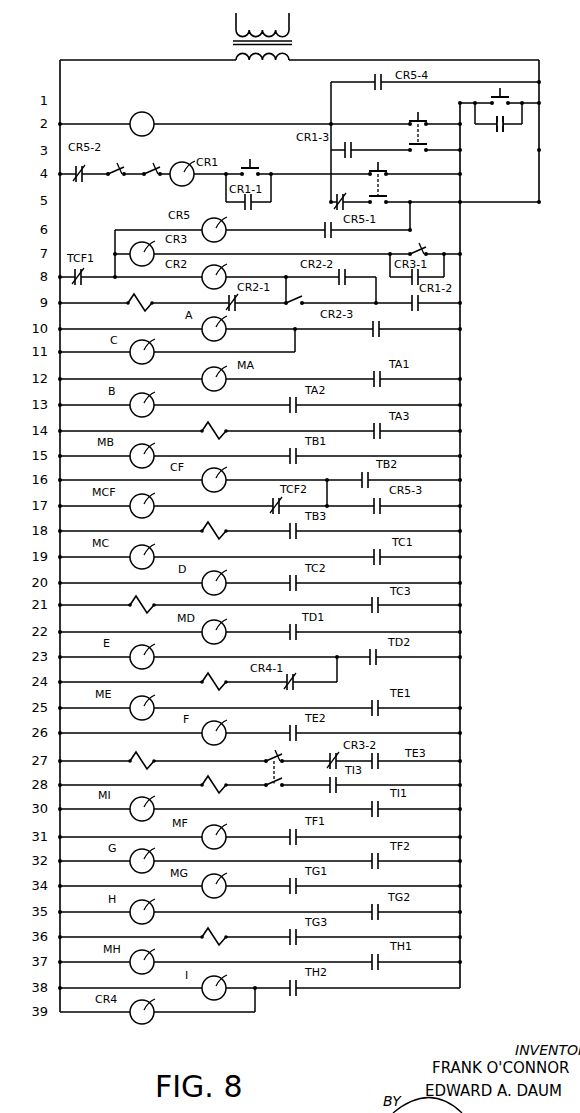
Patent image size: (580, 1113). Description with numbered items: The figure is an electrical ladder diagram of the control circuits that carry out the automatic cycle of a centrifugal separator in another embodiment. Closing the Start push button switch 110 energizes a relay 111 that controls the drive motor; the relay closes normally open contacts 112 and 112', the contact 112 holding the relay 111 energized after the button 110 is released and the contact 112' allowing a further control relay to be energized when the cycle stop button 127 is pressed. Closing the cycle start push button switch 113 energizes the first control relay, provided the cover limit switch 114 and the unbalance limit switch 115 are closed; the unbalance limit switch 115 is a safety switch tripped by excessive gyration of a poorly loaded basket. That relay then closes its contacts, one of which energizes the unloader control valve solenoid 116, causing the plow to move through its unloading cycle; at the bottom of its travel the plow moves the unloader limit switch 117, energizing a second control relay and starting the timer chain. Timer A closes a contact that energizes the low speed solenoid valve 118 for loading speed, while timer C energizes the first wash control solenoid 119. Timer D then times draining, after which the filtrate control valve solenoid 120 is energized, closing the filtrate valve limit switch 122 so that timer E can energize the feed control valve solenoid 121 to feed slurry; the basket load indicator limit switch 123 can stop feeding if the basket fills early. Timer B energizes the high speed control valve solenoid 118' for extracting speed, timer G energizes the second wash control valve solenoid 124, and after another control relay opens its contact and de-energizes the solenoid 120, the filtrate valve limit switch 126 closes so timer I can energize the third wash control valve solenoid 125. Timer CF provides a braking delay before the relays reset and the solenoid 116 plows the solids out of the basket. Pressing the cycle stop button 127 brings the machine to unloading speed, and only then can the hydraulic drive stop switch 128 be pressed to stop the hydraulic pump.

The Start push button switch 110 is at (494, 96).
The relay 111 is at (144, 122).
The normally open contact 112 is at (490, 132).
The normally open contact 112' is at (345, 195).
The push button switch 113 is at (258, 162).
The cover limit switch 114 is at (145, 169).
The unbalance limit switch 115 is at (118, 169).
The unloader control valve solenoid 116 is at (142, 298).
The unloader limit switch 117 is at (300, 298).
The low speed solenoid valve 118 is at (226, 425).
The high speed control valve solenoid 118' is at (227, 525).
The first wash control solenoid 119 is at (136, 598).
The filtrate control valve solenoid 120 is at (207, 675).
The feed control valve solenoid 121 is at (136, 754).
The filtrate valve limit switch 122 is at (266, 752).
The basket load indicator limit switch 123 is at (411, 249).
The second wash control valve solenoid 124 is at (207, 930).
The third wash control valve solenoid 125 is at (207, 778).
The filtrate valve limit switch 126 is at (266, 778).
The cycle stop button 127 is at (385, 191).
The hydraulic drive stop switch 128 is at (407, 126).